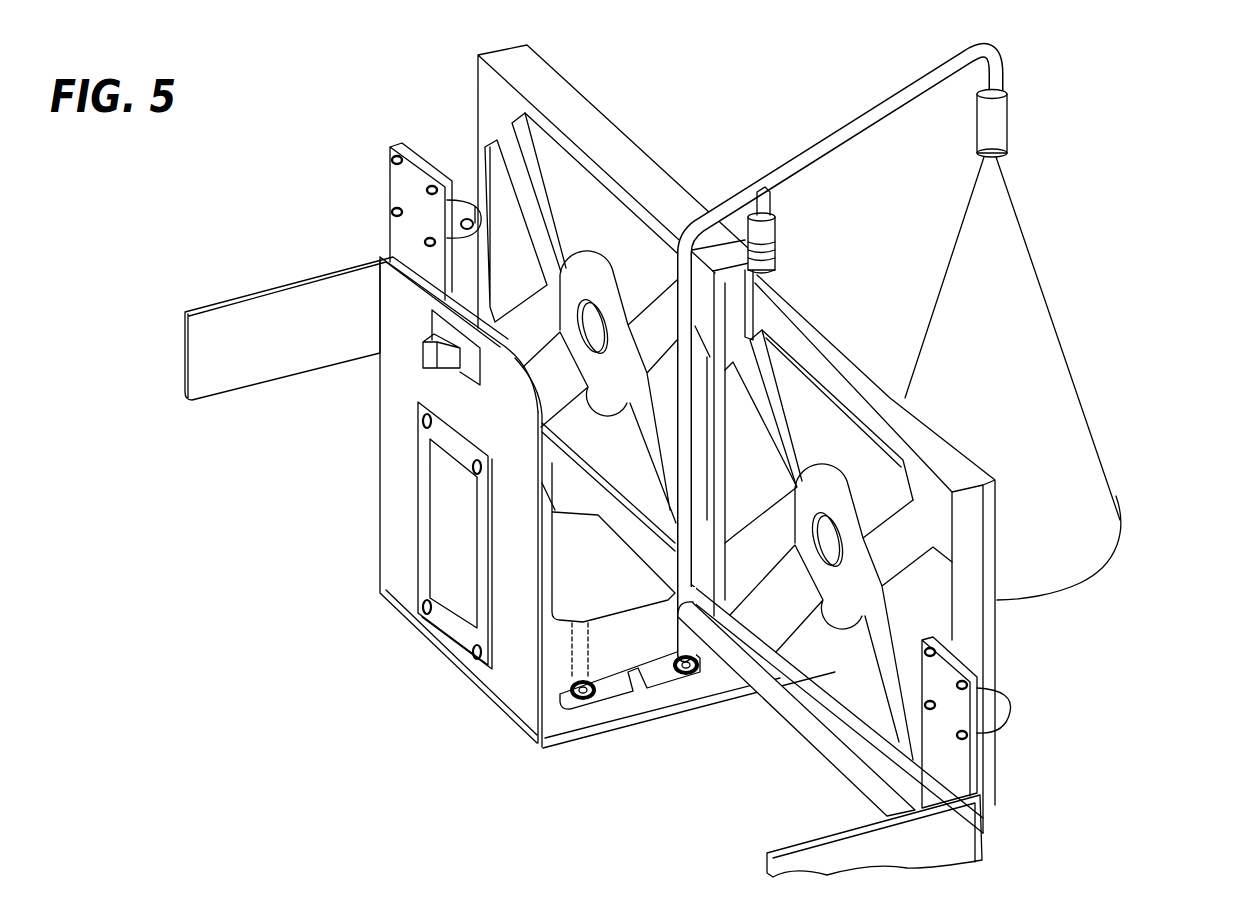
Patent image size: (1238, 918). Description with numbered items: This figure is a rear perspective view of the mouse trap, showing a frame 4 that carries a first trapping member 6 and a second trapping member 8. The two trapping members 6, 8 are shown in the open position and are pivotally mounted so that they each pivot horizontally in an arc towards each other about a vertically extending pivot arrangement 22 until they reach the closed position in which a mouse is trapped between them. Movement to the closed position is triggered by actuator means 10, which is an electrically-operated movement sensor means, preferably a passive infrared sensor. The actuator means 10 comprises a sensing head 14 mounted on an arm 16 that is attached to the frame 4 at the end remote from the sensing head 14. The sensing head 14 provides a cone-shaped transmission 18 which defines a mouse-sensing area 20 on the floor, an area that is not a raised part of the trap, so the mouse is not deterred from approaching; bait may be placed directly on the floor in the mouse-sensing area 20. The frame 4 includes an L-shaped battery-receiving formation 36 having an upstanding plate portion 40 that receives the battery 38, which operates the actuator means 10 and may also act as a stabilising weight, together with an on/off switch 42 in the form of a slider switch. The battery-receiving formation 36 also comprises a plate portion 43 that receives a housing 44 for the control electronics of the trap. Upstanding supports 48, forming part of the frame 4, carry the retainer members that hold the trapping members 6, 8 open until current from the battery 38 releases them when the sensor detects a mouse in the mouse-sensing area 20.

The frame 4 is at (804, 828).
The first trapping member 6 is at (862, 337).
The second trapping member 8 is at (640, 136).
The actuator means 10 is at (1022, 115).
The sensing head 14 is at (1000, 137).
The arm 16 is at (858, 112).
The cone-shaped transmission 18 is at (1058, 324).
The mouse-sensing area 20 is at (1088, 532).
The pivot arrangement 22 is at (778, 263).
The battery-receiving formation 36 is at (372, 546).
The battery 38 is at (418, 487).
The upstanding plate portion 40 is at (516, 439).
The on/off switch 42 is at (427, 350).
The plate portion 43 is at (594, 720).
The housing 44 is at (616, 587).
The upstanding supports 48 is at (403, 190).